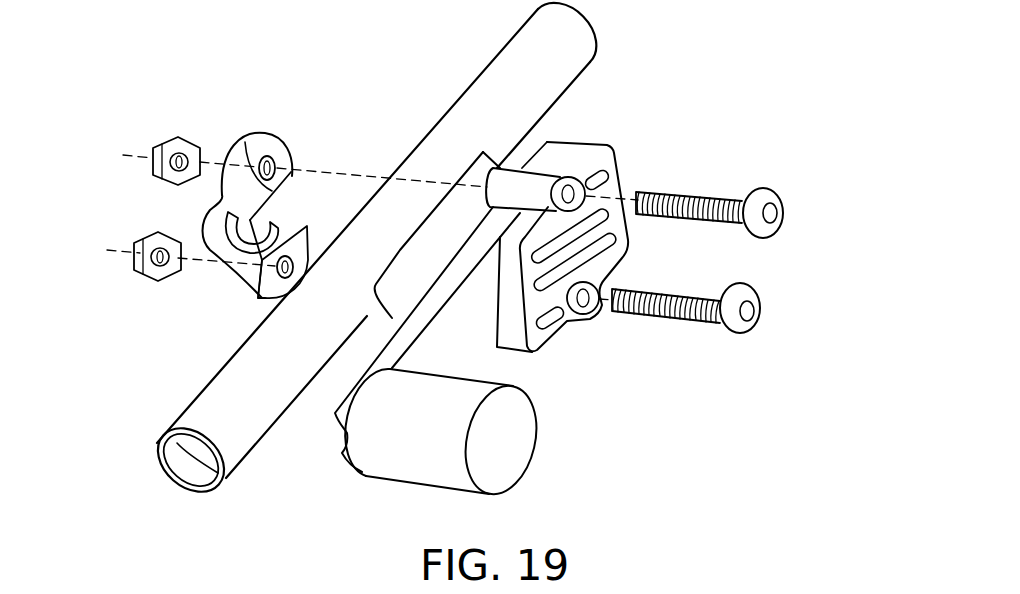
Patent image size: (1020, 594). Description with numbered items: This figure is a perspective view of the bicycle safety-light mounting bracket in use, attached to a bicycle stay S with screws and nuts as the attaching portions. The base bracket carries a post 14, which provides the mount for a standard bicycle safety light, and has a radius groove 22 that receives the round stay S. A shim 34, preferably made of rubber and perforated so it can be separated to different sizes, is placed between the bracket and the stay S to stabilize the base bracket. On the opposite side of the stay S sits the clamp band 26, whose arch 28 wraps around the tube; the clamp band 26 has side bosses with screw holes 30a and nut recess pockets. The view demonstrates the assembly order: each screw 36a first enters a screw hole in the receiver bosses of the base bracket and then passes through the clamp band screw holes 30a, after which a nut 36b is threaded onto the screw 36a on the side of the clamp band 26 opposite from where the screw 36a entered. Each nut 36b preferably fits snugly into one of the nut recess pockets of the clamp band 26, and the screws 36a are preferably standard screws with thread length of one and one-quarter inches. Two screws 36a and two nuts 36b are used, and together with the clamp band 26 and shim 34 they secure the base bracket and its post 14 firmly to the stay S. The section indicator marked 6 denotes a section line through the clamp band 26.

The bicycle stay S is at (570, 38).
The shim 34 is at (439, 237).
The clamp band 26 is at (237, 150).
The arch 28 is at (217, 223).
The screw holes 30a is at (270, 165).
The nut 36b is at (178, 139).
The screw 36a is at (780, 198).
The radius groove 22 is at (459, 332).
The post 14 is at (507, 452).
The section line 6- 6 is at (261, 145).